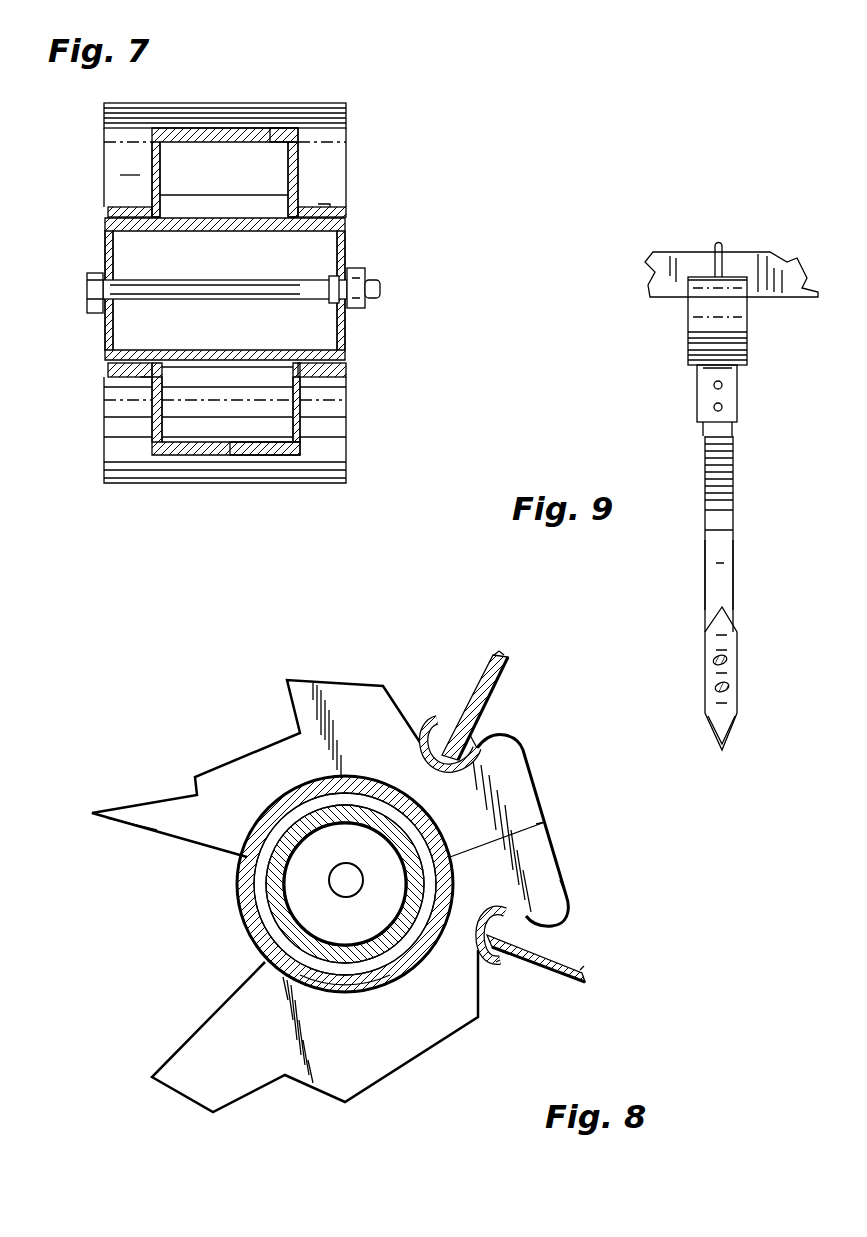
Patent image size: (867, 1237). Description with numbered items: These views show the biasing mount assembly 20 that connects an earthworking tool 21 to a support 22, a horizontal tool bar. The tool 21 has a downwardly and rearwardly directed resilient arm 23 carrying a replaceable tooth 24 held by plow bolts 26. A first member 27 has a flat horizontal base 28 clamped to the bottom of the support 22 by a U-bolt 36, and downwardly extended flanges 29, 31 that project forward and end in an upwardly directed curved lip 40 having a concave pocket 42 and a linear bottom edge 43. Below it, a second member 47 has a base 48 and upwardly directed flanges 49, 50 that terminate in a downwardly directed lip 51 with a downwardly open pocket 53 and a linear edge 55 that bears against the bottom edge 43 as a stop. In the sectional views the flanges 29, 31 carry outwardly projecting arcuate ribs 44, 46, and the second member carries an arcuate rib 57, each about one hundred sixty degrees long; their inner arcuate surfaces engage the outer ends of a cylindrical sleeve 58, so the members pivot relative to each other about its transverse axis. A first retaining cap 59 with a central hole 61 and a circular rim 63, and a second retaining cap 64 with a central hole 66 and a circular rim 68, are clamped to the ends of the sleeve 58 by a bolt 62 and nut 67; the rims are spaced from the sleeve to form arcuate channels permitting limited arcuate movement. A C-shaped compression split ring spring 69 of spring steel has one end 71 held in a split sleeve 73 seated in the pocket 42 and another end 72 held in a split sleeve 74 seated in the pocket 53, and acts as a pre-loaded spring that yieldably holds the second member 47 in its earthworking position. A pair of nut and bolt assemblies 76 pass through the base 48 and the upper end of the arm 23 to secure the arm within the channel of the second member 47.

In FIG. 7, the biasing mount assembly 20 is at (359, 66).
In FIG. 9, the biasing mount assembly 20 is at (678, 341).
In FIG. 9, the earthworking tool 21 is at (736, 513).
In FIG. 9, the support 22 is at (770, 260).
In FIG. 9, the arm 23 is at (726, 558).
In FIG. 9, the replaceable tooth 24 is at (720, 717).
In FIG. 9, the plow bolts 26 is at (730, 686).
In FIG. 7, the first member 27 is at (256, 131).
In FIG. 8, the first member 27 is at (390, 688).
In FIG. 7, the base 28 is at (196, 128).
In FIG. 7, the flange 29 is at (152, 158).
In FIG. 7, the flange 31 is at (299, 160).
In FIG. 9, the U-bolt 36 is at (720, 244).
In FIG. 8, the curved lip 40 is at (510, 752).
In FIG. 8, the pockets 42 is at (426, 750).
In FIG. 8, the linear bottom edges 43 is at (527, 828).
In FIG. 7, the arcuate rib 44 is at (110, 220).
In FIG. 8, the arcuate rib 44 is at (296, 816).
In FIG. 7, the arcuate rib 46 is at (334, 216).
In FIG. 7, the second member 47 is at (209, 460).
In FIG. 9, the second member 47 is at (740, 401).
In FIG. 8, the second member 47 is at (480, 1011).
In FIG. 7, the base 48 is at (262, 456).
In FIG. 9, the base 48 is at (702, 394).
In FIG. 7, the flange 49 is at (152, 436).
In FIG. 7, the flange 50 is at (300, 430).
In FIG. 8, the lip 51 is at (556, 906).
In FIG. 8, the pockets 53 is at (490, 912).
In FIG. 7, the linear edge 55 is at (110, 370).
In FIG. 8, the linear edge 55 is at (543, 831).
In FIG. 7, the arcuate rib 57 is at (346, 368).
In FIG. 8, the arcuate rib 57 is at (340, 975).
In FIG. 7, the sleeve 58 is at (210, 232).
In FIG. 8, the sleeve 58 is at (300, 838).
In FIG. 7, the first retaining cap 59 is at (106, 246).
In FIG. 7, the central hole 61 is at (114, 282).
In FIG. 7, the bolt 62 is at (87, 292).
In FIG. 8, the bolt 62 is at (346, 897).
In FIG. 7, the circular rim 63 is at (138, 377).
In FIG. 7, the second retaining cap 64 is at (346, 328).
In FIG. 7, the central hole 66 is at (344, 262).
In FIG. 7, the nut 67 is at (366, 272).
In FIG. 7, the circular rim 68 is at (332, 206).
In FIG. 7, the compression split ring spring 69 is at (334, 104).
In FIG. 9, the compression split ring spring 69 is at (740, 315).
In FIG. 7, the spring end 71 is at (120, 177).
In FIG. 8, the spring end 71 is at (480, 682).
In FIG. 7, the spring end 72 is at (340, 400).
In FIG. 8, the split sleeve 73 is at (480, 730).
In FIG. 8, the split sleeve 74 is at (500, 963).
In FIG. 9, the nut and bolt assemblies 76 is at (713, 408).